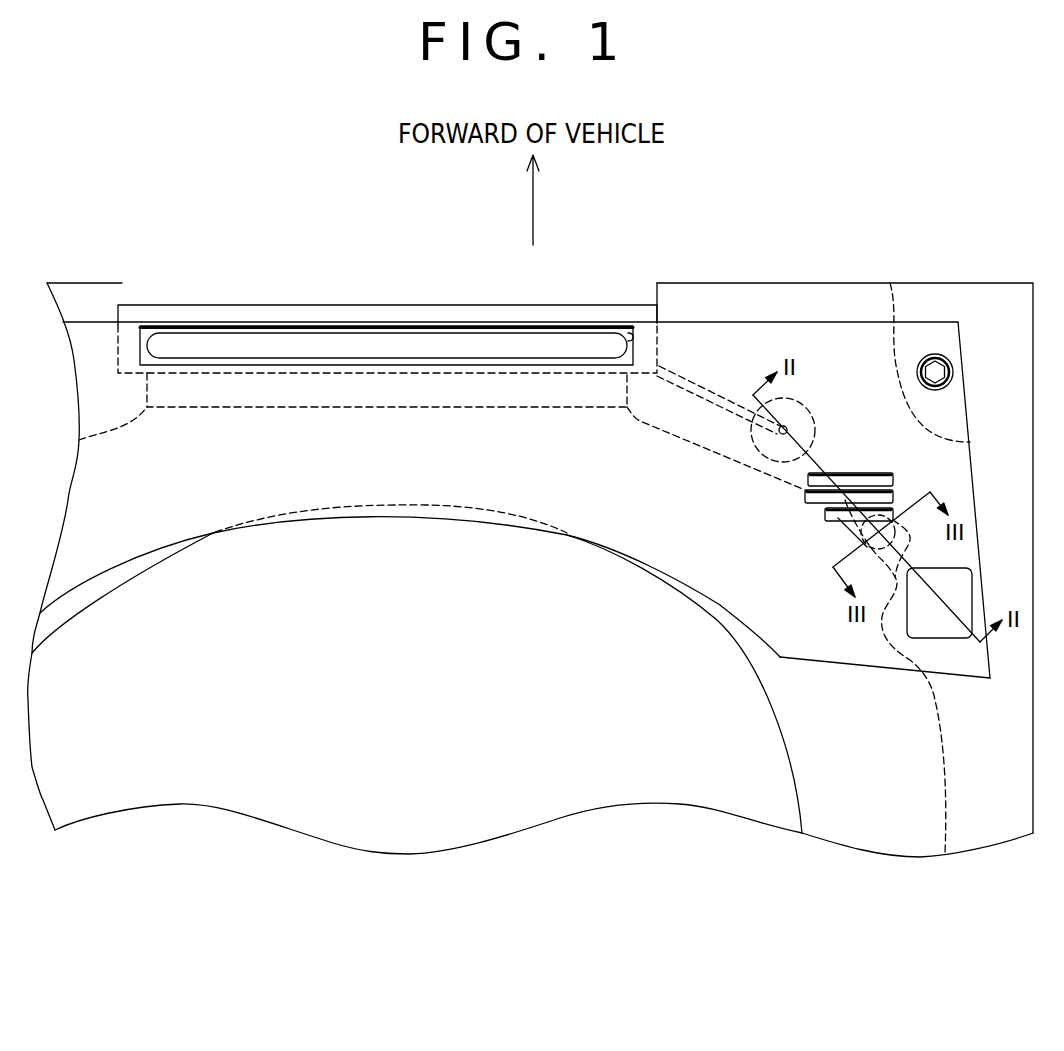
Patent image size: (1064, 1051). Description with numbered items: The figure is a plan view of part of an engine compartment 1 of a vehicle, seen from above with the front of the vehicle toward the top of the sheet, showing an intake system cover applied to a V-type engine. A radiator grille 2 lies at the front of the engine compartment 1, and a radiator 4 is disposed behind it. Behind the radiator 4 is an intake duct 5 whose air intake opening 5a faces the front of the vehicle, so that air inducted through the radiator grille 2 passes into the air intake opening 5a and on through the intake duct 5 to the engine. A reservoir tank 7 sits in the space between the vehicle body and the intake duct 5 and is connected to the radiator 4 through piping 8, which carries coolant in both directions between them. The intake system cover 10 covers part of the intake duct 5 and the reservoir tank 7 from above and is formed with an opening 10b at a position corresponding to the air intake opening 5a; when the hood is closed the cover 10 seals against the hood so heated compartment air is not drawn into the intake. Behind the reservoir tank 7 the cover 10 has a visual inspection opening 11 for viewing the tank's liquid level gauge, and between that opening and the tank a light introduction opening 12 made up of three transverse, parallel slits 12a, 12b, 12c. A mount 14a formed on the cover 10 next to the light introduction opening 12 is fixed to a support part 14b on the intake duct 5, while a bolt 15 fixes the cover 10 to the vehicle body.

The engine compartment 1 is at (815, 283).
The radiator grille 2 is at (610, 293).
The radiator 4 is at (657, 310).
The intake duct 5 is at (630, 565).
The air intake opening 5a is at (517, 356).
The reservoir tank 7 is at (815, 422).
The piping 8 is at (712, 396).
The intake system cover 10 is at (972, 474).
The opening 10b is at (633, 338).
The visual inspection opening 11 is at (941, 568).
The light introduction opening 12 is at (812, 477).
The slit 12a is at (826, 517).
The slit 12b is at (805, 497).
The slit 12c is at (808, 478).
The mount 14a is at (860, 540).
The support part 14b is at (895, 676).
The bolt 15 is at (953, 369).